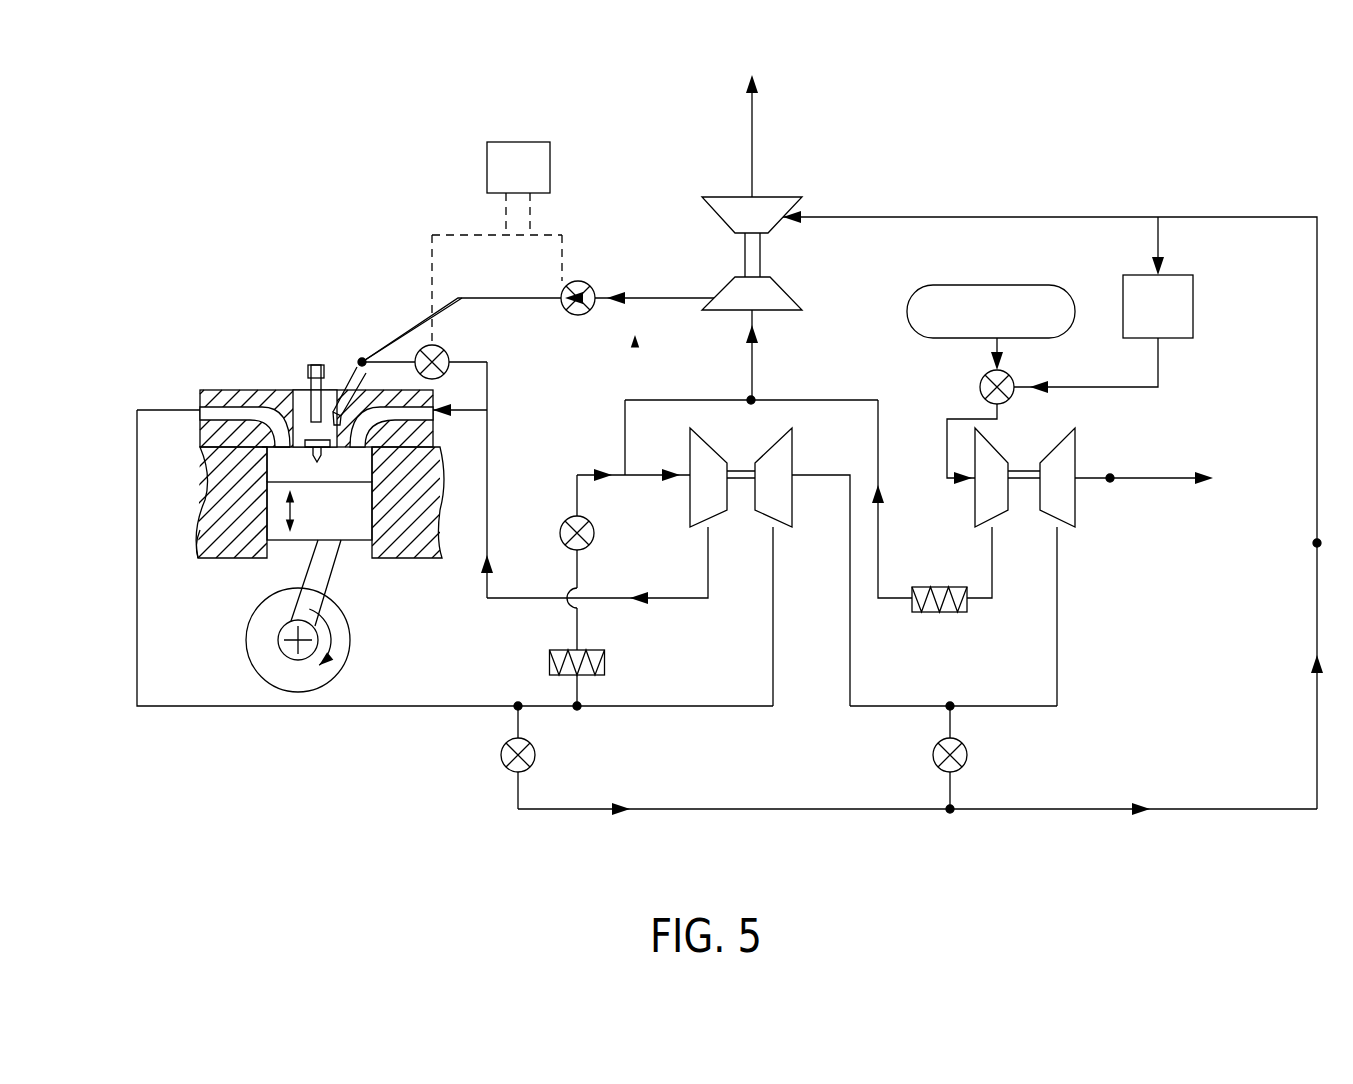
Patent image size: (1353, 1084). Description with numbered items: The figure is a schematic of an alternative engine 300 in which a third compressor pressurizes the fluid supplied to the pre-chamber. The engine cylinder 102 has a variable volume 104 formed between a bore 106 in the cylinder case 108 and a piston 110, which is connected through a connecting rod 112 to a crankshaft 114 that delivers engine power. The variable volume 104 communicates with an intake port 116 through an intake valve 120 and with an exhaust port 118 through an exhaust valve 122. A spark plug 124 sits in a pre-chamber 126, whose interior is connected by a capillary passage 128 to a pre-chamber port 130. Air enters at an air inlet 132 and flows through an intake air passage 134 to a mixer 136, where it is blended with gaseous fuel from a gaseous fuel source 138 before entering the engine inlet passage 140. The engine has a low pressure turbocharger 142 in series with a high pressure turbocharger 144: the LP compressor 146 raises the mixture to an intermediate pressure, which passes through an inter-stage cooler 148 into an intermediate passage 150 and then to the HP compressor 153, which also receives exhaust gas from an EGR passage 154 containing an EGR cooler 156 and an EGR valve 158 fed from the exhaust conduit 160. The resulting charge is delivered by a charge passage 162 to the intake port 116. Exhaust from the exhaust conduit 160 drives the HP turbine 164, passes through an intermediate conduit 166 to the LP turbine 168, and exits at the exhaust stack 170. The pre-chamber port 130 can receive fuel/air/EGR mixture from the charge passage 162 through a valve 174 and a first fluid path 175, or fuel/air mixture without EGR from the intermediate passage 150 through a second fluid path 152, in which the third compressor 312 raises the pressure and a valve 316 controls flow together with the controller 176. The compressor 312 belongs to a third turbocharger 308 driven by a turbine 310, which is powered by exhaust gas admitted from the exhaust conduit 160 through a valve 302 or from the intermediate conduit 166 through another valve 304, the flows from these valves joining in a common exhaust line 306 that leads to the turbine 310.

The engine cylinder 102 is at (185, 330).
The variable volume 104 is at (258, 478).
The bore 106 is at (435, 483).
The cylinder case 108 is at (210, 560).
The piston 110 is at (335, 526).
The connecting rod 112 is at (320, 568).
The crankshaft 114 is at (338, 655).
The intake port 116 is at (437, 420).
The exhaust port 118 is at (197, 408).
The intake valve 120 is at (263, 457).
The exhaust valve 122 is at (287, 468).
The spark plug 124 is at (310, 385).
The pre-chamber 126 is at (314, 374).
The capillary passage 128 is at (358, 360).
The pre-chamber port 130 is at (392, 340).
The air inlet 132 is at (1173, 319).
The intake air passage 134 is at (1160, 360).
The mixer 136 is at (1012, 375).
The gaseous fuel source 138 is at (1005, 325).
The engine inlet passage 140 is at (947, 430).
The low pressure turbocharger 142 is at (1108, 579).
The high pressure turbocharger 144 is at (800, 345).
The LP compressor 146 is at (992, 440).
The inter-stage cooler 148 is at (940, 613).
The intermediate passage 150 is at (880, 412).
The second fluid path 152 is at (665, 296).
The HP compressor 153 is at (717, 440).
The EGR passage 154 is at (580, 573).
The EGR cooler 156 is at (607, 663).
The EGR valve 158 is at (597, 525).
The exhaust conduit 160 is at (360, 708).
The charge passage 162 is at (488, 492).
The HP turbine 164 is at (795, 455).
The intermediate conduit 166 is at (1002, 708).
The LP turbine 168 is at (1077, 455).
The exhaust stack 170 is at (760, 135).
The valve 174 is at (447, 350).
The first fluid path 175 is at (489, 382).
The controller 176 is at (533, 177).
The engine 300 is at (1160, 126).
The valve 302 is at (500, 760).
The valve 304 is at (935, 760).
The bypass line 306 is at (660, 811).
The third turbocharger 308 is at (886, 187).
The turbine 310 is at (725, 197).
The third compressor 312 is at (723, 313).
The valve 316 is at (585, 282).